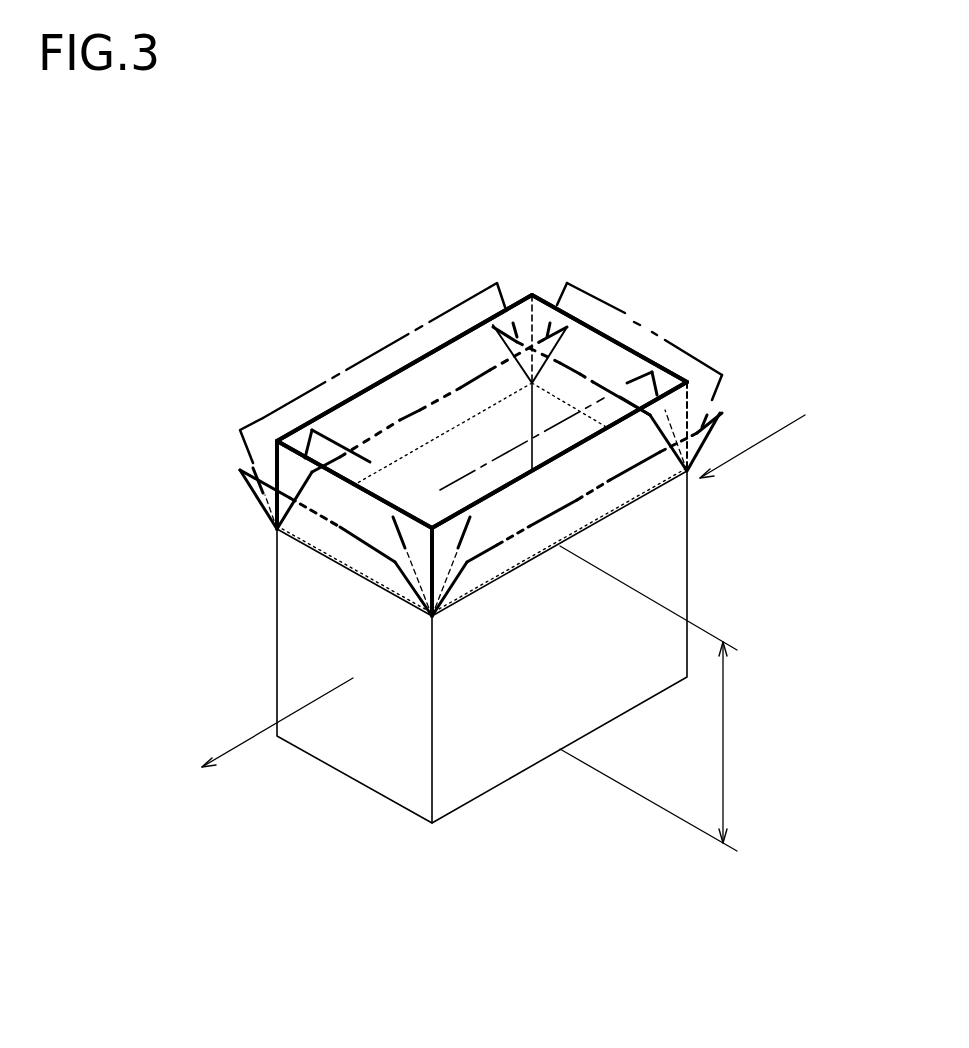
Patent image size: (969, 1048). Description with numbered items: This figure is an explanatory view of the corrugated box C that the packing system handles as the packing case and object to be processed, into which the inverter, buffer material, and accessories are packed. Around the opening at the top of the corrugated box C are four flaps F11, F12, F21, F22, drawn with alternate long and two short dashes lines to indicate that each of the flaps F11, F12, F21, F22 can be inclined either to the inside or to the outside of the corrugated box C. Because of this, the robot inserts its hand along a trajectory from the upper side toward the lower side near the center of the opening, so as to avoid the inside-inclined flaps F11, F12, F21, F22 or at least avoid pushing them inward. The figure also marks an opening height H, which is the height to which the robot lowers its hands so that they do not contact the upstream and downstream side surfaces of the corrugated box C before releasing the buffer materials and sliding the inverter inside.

The corrugated box C is at (287, 245).
The flap F11 is at (367, 497).
The flap F12 is at (598, 333).
The flap F21 is at (383, 380).
The flap F22 is at (582, 447).
The opening height H is at (658, 698).